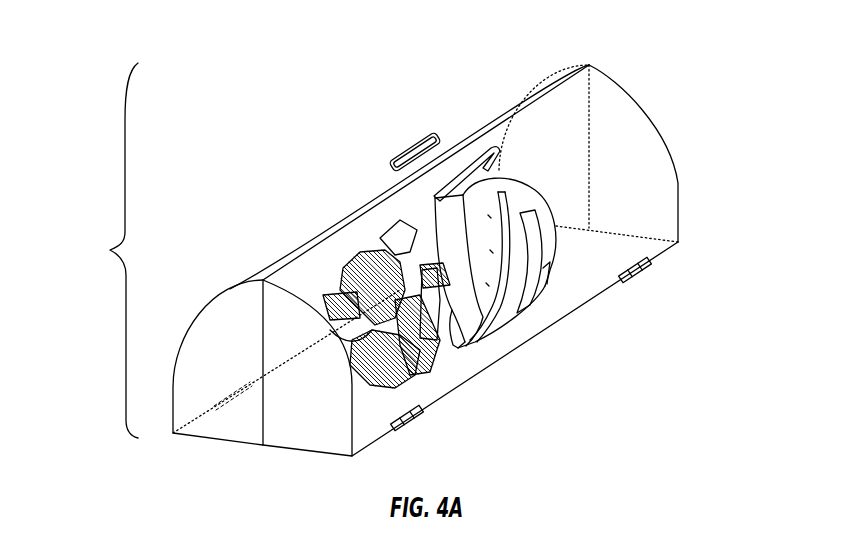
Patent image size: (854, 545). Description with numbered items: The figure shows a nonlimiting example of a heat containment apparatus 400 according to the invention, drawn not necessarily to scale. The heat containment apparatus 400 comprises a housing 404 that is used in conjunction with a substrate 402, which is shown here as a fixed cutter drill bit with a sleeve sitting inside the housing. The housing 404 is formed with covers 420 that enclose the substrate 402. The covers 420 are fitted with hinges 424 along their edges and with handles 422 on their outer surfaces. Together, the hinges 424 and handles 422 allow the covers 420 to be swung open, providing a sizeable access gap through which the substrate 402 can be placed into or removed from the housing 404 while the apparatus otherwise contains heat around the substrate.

The heat containment apparatus 400 is at (140, 38).
The substrate 402 is at (477, 337).
The housing 404 is at (104, 250).
The covers 420 is at (328, 230).
The handles 422 is at (482, 152).
The hinges 424 is at (421, 418).